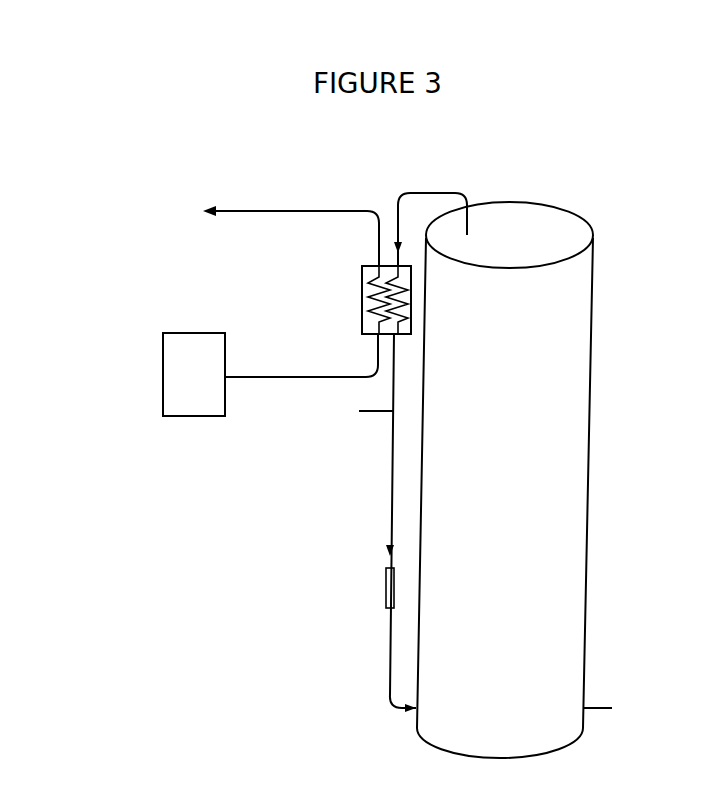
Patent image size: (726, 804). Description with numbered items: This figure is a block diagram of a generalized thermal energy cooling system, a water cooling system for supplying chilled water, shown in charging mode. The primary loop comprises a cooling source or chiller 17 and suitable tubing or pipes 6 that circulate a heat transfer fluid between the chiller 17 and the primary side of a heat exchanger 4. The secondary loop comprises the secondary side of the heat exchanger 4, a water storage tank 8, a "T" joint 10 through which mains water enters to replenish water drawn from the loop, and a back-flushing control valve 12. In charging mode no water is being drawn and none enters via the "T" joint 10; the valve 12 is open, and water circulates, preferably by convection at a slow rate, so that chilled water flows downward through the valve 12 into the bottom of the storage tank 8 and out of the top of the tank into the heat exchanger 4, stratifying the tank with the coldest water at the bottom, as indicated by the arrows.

The heat exchanger 4 is at (362, 300).
The tubing or pipes 6 is at (283, 208).
The water storage tank 8 is at (593, 347).
The "T" joint 10 is at (378, 415).
The back-flushing control valve 12 is at (385, 588).
The chiller 17 is at (193, 332).